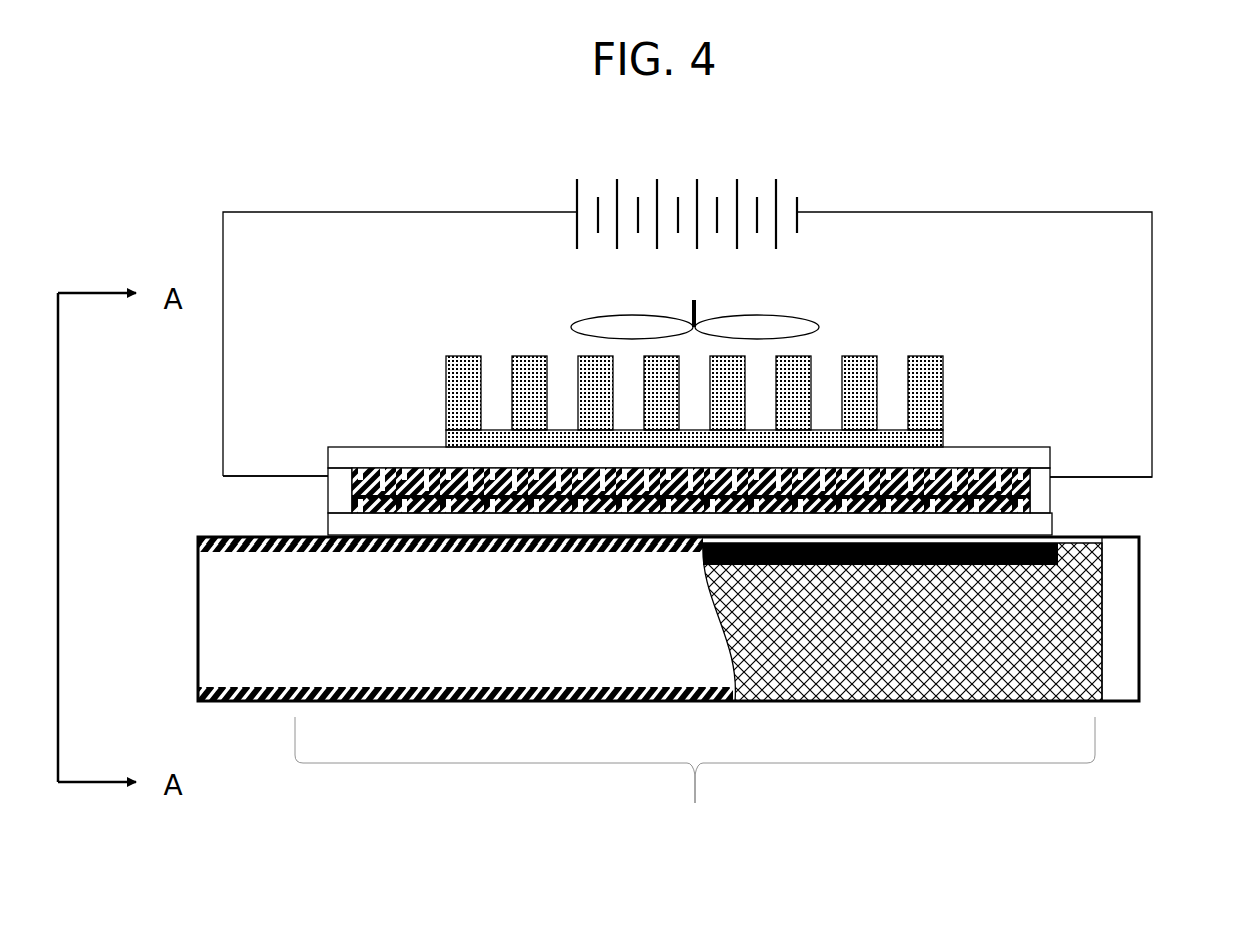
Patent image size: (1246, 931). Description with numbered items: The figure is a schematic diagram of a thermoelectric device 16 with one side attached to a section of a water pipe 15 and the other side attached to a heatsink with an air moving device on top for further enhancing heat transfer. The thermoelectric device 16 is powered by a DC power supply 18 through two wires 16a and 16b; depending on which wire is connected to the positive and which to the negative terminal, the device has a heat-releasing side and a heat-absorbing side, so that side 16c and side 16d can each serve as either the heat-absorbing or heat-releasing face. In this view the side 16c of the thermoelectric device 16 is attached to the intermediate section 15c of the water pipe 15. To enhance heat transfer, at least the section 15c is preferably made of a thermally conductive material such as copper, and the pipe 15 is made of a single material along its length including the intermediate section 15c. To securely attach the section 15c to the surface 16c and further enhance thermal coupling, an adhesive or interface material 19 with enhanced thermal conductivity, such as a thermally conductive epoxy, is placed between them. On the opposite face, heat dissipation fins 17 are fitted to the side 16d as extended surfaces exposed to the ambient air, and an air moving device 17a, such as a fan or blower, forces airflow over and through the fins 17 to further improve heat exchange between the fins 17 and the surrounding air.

The water pipe 15 is at (707, 657).
The intermediate section of the water pipe 15c is at (695, 787).
The thermoelectric device 16 is at (644, 428).
The wire 16a is at (1065, 477).
The wire 16b is at (313, 473).
The side of the thermoelectric device 16c is at (335, 523).
The side of the thermoelectric device 16d is at (392, 457).
The heat dissipation fins 17 is at (925, 370).
The air moving device 17a is at (797, 327).
The DC power supply 18 is at (585, 178).
The interface material 19 is at (1115, 538).